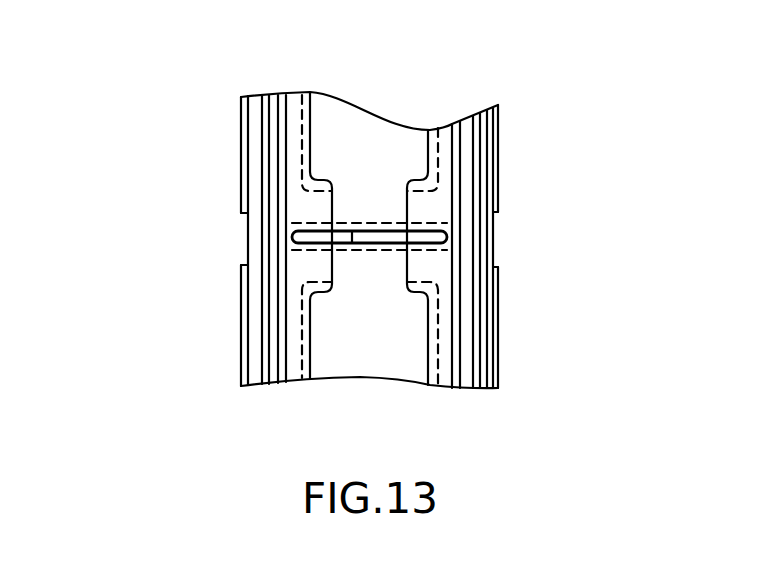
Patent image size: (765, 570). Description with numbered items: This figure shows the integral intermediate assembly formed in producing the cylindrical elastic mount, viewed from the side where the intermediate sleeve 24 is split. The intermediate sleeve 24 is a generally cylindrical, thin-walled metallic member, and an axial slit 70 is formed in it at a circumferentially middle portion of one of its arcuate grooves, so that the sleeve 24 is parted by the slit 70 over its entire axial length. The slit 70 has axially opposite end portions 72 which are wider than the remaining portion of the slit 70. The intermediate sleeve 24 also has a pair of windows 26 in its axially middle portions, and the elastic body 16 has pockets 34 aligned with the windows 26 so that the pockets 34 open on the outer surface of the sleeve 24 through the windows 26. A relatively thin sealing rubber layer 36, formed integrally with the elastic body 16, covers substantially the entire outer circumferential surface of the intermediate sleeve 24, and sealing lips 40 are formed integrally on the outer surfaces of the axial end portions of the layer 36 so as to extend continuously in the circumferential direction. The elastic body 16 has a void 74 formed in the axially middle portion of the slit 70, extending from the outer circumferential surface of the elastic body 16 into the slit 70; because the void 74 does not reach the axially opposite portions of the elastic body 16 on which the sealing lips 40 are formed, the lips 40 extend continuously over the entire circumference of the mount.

The elastic body 16 is at (447, 342).
The intermediate sleeve 24 is at (240, 328).
The window 26 is at (303, 122).
The pocket 34 is at (427, 150).
The sealing rubber layer 36 is at (252, 287).
The sealing lip 40 is at (264, 117).
The axial slit 70 is at (415, 228).
The axially opposite end portion of slit 72 is at (241, 213).
The void 74 is at (352, 243).